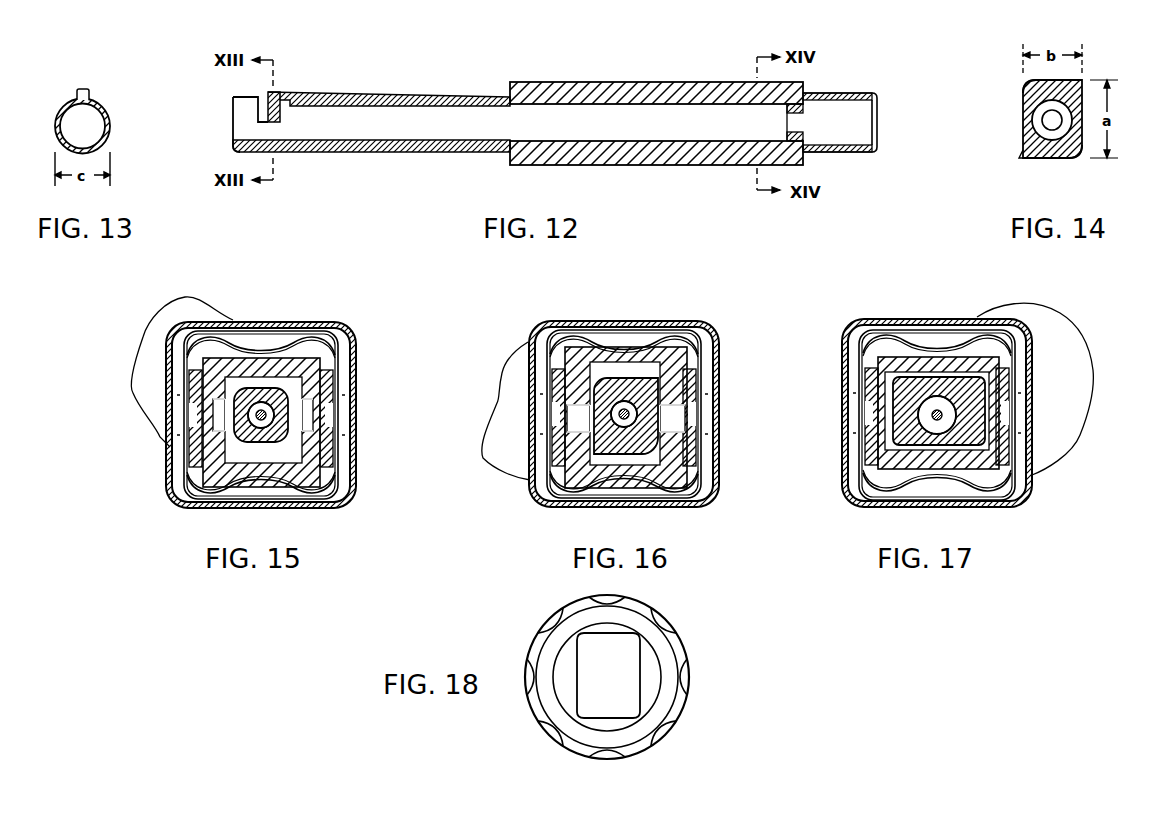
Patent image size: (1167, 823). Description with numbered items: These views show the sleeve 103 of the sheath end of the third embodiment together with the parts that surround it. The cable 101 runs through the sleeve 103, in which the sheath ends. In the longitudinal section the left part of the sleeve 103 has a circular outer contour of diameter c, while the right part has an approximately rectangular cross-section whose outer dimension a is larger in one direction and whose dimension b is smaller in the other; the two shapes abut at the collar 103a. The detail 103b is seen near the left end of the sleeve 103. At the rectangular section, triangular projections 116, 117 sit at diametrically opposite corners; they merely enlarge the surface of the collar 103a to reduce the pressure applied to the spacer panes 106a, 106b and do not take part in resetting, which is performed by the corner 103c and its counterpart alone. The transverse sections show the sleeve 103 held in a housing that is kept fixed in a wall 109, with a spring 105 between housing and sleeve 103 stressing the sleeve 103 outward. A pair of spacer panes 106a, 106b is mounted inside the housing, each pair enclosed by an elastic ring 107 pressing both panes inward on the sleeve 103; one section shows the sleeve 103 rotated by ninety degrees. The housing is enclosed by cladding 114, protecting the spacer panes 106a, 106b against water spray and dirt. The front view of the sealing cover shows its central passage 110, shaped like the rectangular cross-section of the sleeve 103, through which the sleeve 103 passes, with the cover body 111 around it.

In FIG. 15, the cable 101 is at (330, 404).
In FIG. 16, the cable 101 is at (692, 404).
In FIG. 17, the cable 101 is at (922, 352).
In FIG. 12, the sleeve 103 is at (555, 120).
In FIG. 14, the sleeve 103 is at (1085, 82).
In FIG. 15, the sleeve 103 is at (308, 420).
In FIG. 16, the sleeve 103 is at (626, 413).
In FIG. 17, the sleeve 103 is at (891, 411).
In FIG. 12, the collar 103a is at (512, 153).
In FIG. 13, the projection of tube 103b is at (85, 90).
In FIG. 12, the projection of tube 103b is at (282, 93).
In FIG. 14, the corner 103c is at (1026, 156).
In FIG. 15, the spring 105 is at (187, 434).
In FIG. 16, the spring 105 is at (689, 444).
In FIG. 17, the spring 105 is at (1009, 445).
In FIG. 15, the spacer pane 106a is at (261, 326).
In FIG. 16, the spacer pane 106a is at (624, 320).
In FIG. 17, the spacer pane 106a is at (937, 327).
In FIG. 15, the spacer pane 106b is at (284, 502).
In FIG. 16, the spacer pane 106b is at (647, 501).
In FIG. 17, the spacer pane 106b is at (910, 501).
In FIG. 15, the elastic ring 107 is at (233, 430).
In FIG. 16, the elastic ring 107 is at (600, 430).
In FIG. 17, the elastic ring 107 is at (966, 431).
In FIG. 15, the wall 109 is at (153, 372).
In FIG. 16, the wall 109 is at (492, 411).
In FIG. 17, the wall 109 is at (1053, 389).
In FIG. 18, the passage 110 is at (623, 656).
In FIG. 18, the knob 111 is at (680, 702).
In FIG. 15, the cladding 114 is at (276, 396).
In FIG. 17, the cladding 114 is at (916, 395).
In FIG. 14, the triangular projection 116 is at (1020, 82).
In FIG. 14, the triangular projection 117 is at (1084, 156).